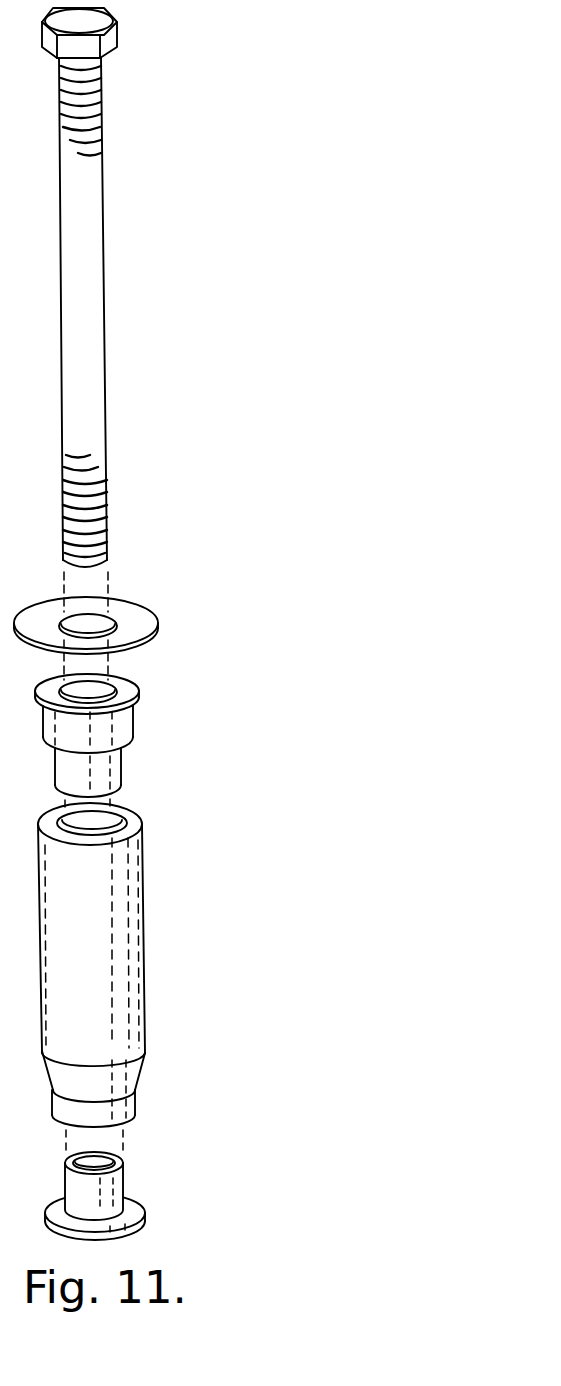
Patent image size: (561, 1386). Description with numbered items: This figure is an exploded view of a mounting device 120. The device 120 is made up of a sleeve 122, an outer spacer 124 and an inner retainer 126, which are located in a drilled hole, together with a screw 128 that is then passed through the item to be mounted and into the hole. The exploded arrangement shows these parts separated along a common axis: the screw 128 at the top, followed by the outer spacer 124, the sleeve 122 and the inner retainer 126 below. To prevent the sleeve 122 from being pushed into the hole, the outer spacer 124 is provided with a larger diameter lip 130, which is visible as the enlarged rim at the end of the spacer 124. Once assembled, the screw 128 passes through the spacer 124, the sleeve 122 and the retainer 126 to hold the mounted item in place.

The device 120 is at (160, 188).
The sleeve 122 is at (115, 980).
The outer spacer 124 is at (136, 738).
The inner retainer 126 is at (143, 1218).
The screw 128 is at (102, 463).
The larger diameter lip 130 is at (140, 700).